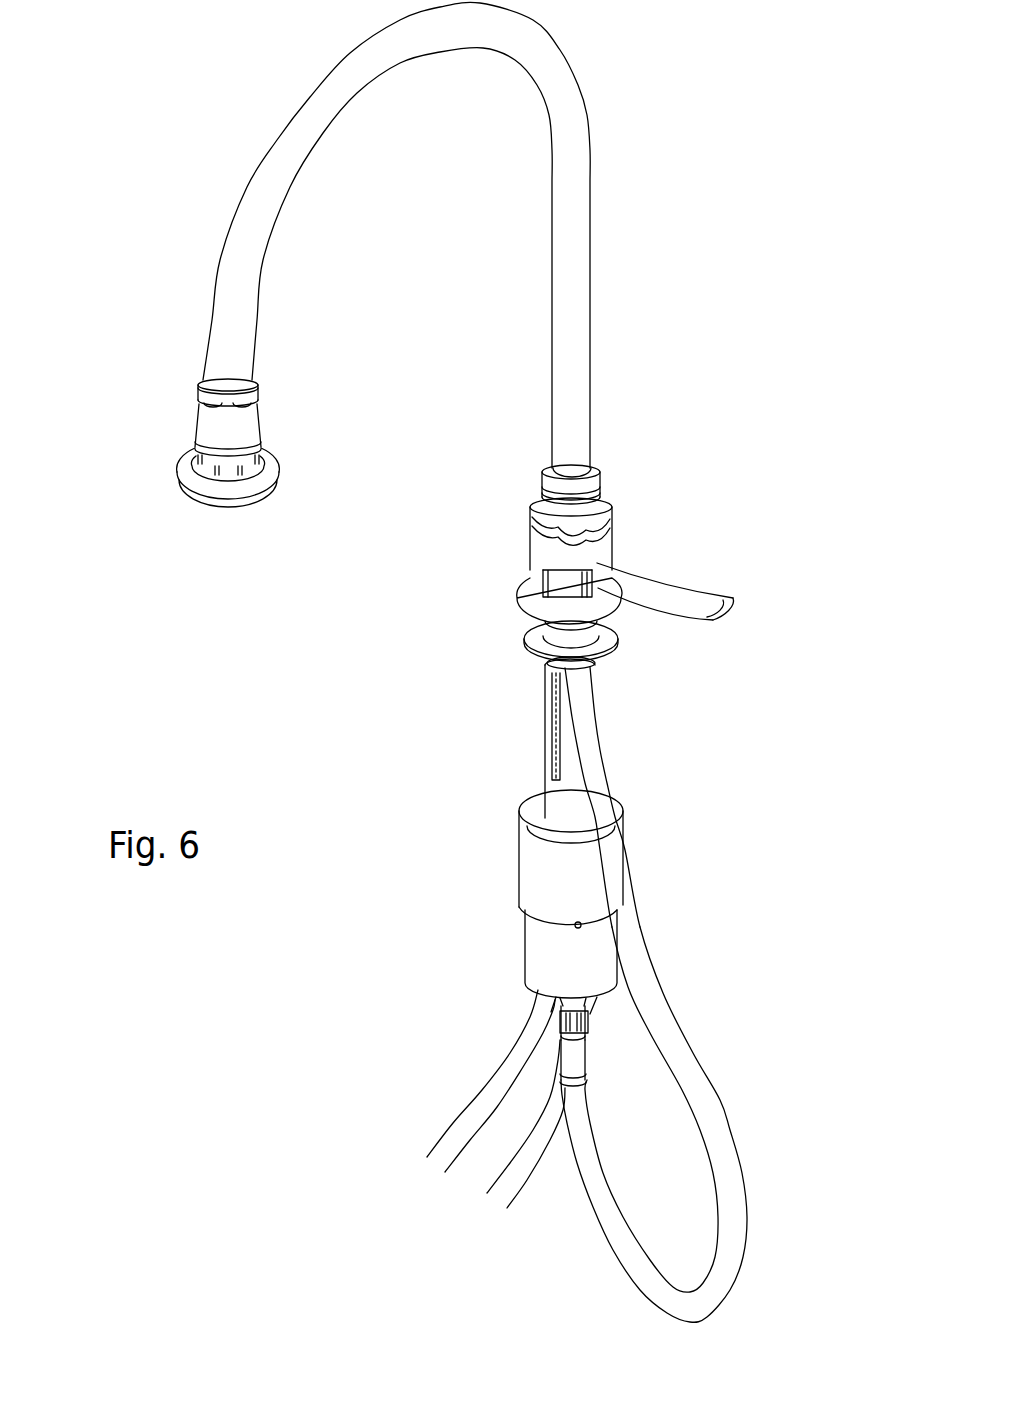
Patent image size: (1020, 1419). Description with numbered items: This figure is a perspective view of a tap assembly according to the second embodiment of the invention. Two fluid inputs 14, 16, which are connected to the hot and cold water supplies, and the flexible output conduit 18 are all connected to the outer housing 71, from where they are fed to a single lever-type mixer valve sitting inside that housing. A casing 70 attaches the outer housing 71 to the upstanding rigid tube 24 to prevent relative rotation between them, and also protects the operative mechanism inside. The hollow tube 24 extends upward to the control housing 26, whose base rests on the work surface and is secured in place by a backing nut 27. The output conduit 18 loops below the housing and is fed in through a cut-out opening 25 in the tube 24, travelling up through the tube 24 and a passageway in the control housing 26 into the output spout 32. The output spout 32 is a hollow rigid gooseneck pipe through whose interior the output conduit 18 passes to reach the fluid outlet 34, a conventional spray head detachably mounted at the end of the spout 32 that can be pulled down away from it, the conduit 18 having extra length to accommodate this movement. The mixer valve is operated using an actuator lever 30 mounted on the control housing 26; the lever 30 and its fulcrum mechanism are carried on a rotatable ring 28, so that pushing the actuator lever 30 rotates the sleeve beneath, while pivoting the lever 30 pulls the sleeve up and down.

The fluid input 14 is at (480, 1118).
The fluid input 16 is at (517, 1172).
The output conduit 18 is at (683, 1053).
The upstanding rigid tube 24 is at (545, 735).
The cut-out opening 25 is at (593, 703).
The control housing 26 is at (525, 596).
The backing nut 27 is at (612, 648).
The rotatable ring 28 is at (553, 582).
The actuator lever 30 is at (683, 608).
The output spout 32 is at (583, 238).
The fluid outlet 34 is at (258, 428).
The casing 70 is at (535, 895).
The outer housing 71 is at (545, 950).